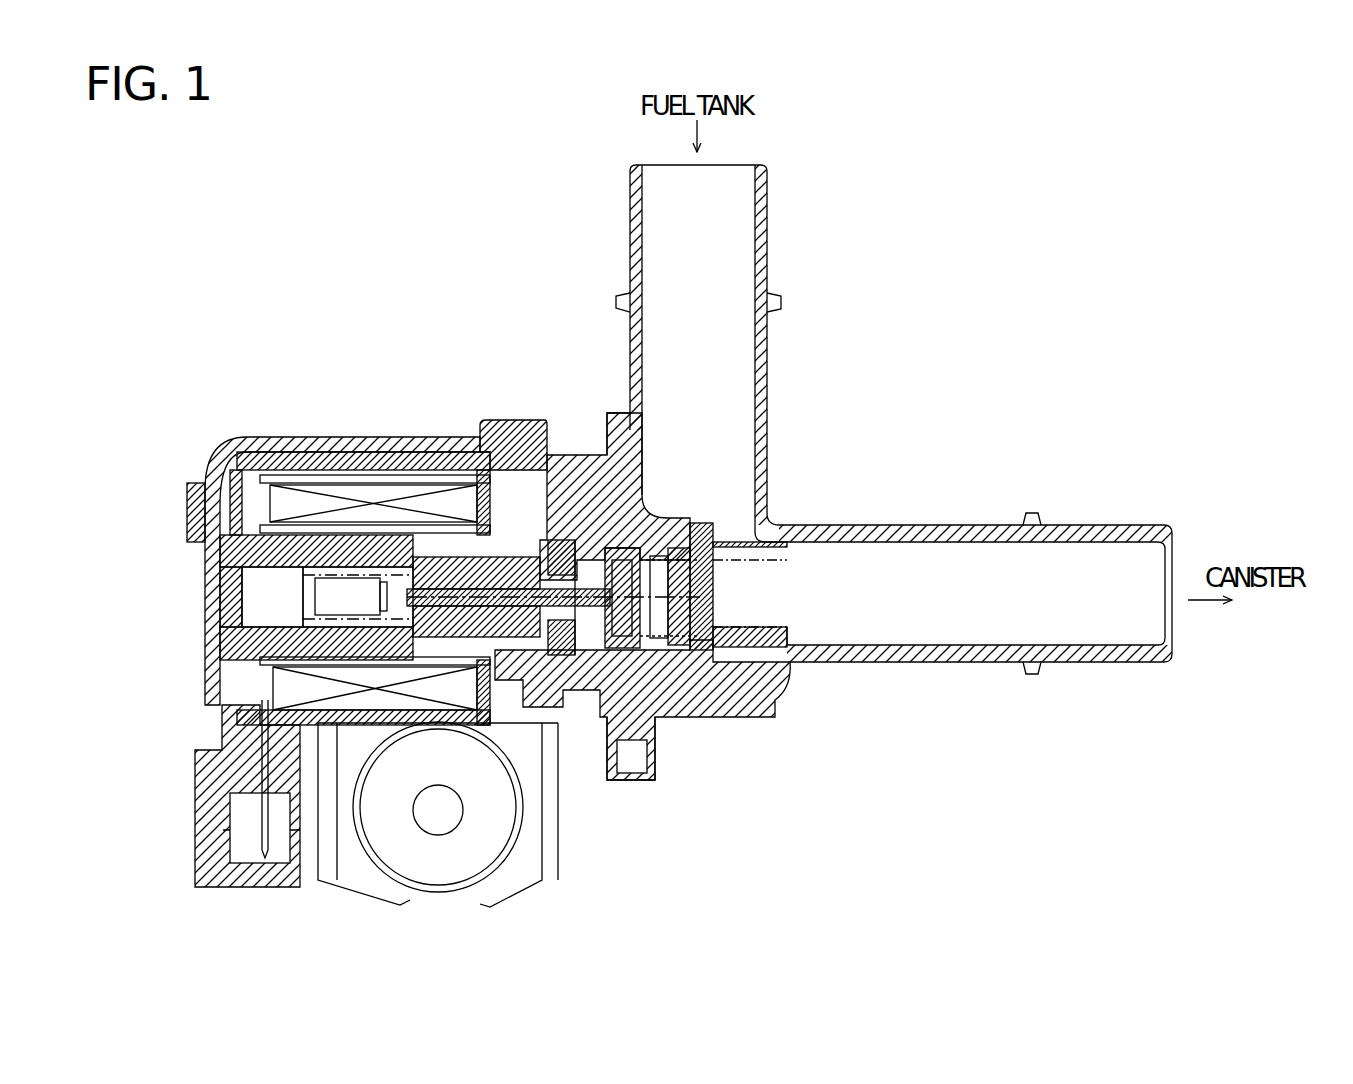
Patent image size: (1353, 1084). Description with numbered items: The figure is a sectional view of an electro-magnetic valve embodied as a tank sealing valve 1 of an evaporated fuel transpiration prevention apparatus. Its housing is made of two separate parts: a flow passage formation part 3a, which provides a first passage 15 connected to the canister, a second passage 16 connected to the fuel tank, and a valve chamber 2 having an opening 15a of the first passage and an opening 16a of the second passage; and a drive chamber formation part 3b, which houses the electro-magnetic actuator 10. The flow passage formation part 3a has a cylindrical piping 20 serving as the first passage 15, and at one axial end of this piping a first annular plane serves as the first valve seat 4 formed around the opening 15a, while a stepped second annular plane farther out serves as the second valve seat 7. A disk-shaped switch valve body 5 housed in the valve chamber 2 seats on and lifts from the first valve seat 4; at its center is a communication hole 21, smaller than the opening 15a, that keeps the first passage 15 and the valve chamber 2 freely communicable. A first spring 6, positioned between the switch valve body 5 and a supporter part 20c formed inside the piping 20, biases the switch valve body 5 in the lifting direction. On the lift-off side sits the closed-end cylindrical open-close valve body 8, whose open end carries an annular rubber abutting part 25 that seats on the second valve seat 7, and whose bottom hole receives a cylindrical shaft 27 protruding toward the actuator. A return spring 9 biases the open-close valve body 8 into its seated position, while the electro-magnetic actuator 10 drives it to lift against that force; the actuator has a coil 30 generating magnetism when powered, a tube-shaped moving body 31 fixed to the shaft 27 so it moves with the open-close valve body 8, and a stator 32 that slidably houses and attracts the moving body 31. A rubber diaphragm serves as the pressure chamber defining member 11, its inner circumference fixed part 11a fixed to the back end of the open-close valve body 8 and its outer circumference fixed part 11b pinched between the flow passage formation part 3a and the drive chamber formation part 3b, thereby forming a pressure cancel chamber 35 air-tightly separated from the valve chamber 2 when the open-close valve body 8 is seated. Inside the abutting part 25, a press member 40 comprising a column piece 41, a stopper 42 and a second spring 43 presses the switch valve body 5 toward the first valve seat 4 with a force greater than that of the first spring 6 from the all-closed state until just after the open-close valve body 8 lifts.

The tank sealing valve 1 is at (1108, 188).
The valve chamber 2 is at (637, 665).
The flow passage formation part 3a is at (778, 692).
The drive chamber formation part 3b is at (406, 438).
The first valve seat 4 is at (700, 540).
The switch valve body 5 is at (708, 567).
The first spring 6 is at (712, 583).
The second valve seat 7 is at (735, 642).
The open-close valve body 8 is at (650, 655).
The return spring 9 is at (296, 868).
The electro-magnetic actuator 10 is at (243, 462).
The pressure chamber defining member 11 is at (608, 772).
The inner circumference fixed part 11a is at (640, 782).
The outer circumference fixed part 11b is at (582, 715).
The first passage 15 is at (1093, 615).
The opening of the first passage 15a is at (715, 655).
The second passage 16 is at (725, 258).
The opening of the second passage 16a is at (604, 410).
The cylindrical piping 20 is at (1008, 656).
The supporter part 20c is at (790, 628).
The communication hole 21 is at (712, 595).
The abutting part 25 is at (697, 513).
The shaft 27 is at (473, 750).
The coil 30 is at (357, 780).
The moving body 31 is at (418, 690).
The stator 32 is at (362, 545).
The pressure cancel chamber 35 is at (535, 740).
The press member 40 is at (525, 468).
The column piece 41 is at (568, 470).
The stopper 42 is at (660, 480).
The second spring 43 is at (545, 488).